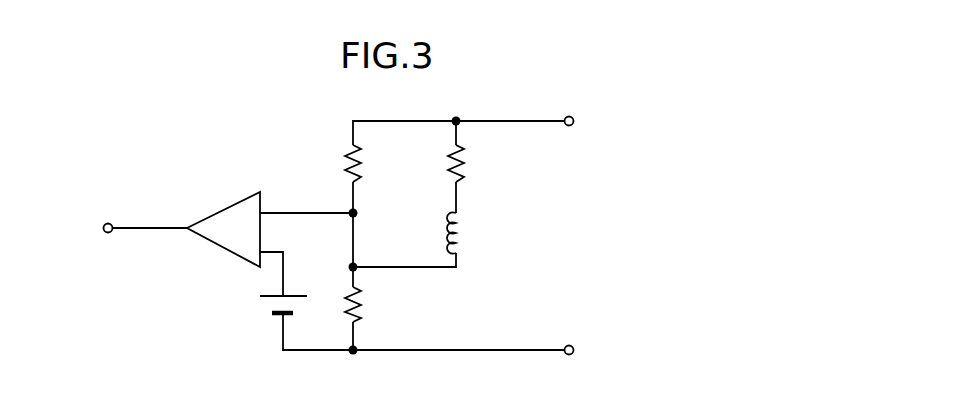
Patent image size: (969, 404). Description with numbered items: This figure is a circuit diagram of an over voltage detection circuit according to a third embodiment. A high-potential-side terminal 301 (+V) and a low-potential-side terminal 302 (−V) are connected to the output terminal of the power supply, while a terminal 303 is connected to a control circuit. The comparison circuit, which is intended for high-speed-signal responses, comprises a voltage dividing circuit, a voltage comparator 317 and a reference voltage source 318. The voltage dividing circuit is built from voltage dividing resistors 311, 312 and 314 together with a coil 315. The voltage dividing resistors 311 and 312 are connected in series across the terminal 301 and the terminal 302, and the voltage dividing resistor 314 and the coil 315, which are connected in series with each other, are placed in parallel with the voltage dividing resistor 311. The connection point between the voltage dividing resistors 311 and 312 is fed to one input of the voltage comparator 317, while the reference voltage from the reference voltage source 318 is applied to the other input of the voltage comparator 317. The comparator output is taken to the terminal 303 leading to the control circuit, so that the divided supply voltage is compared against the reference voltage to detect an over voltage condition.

The terminal 301 is at (574, 121).
The terminal 302 is at (574, 350).
The terminal 303 is at (105, 224).
The voltage dividing resistor 311 is at (362, 168).
The voltage dividing resistor 312 is at (362, 306).
The voltage dividing resistor 314 is at (465, 168).
The coil 315 is at (462, 240).
The voltage comparator 317 is at (223, 211).
The reference voltage source 318 is at (266, 304).